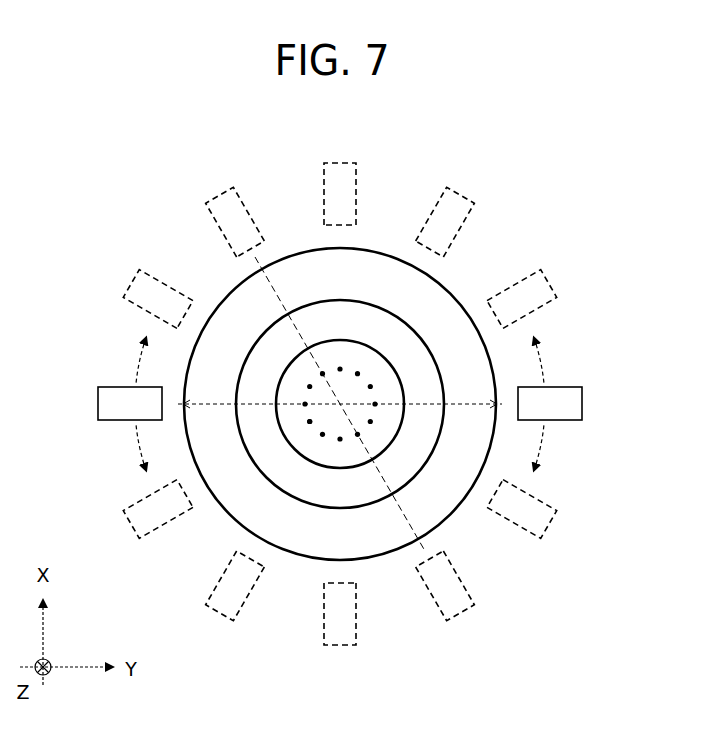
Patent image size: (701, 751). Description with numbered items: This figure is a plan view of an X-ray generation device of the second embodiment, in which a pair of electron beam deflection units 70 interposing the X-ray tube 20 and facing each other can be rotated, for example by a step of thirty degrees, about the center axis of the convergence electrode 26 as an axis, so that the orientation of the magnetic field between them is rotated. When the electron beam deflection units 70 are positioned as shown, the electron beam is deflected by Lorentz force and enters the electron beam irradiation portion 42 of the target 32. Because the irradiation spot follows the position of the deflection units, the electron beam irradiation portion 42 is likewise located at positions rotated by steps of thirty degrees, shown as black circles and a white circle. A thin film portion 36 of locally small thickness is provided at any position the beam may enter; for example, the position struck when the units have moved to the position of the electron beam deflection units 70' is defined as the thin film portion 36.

The X-ray tube 20 is at (368, 246).
The convergence electrode 26 is at (273, 320).
The target 32 is at (370, 340).
The thin film portion 36 is at (308, 428).
The electron beam irradiation portion 42 is at (340, 443).
The electron beam deflection unit 70 is at (342, 403).
The electron beam deflection unit (rotated position) 70' is at (347, 406).